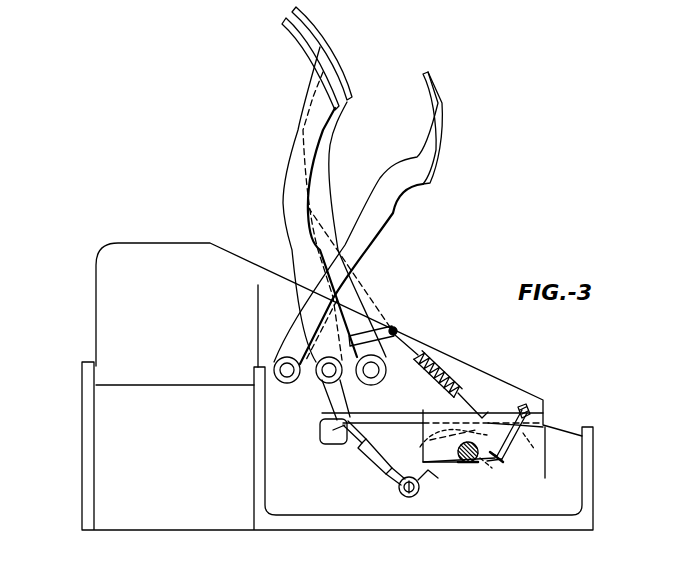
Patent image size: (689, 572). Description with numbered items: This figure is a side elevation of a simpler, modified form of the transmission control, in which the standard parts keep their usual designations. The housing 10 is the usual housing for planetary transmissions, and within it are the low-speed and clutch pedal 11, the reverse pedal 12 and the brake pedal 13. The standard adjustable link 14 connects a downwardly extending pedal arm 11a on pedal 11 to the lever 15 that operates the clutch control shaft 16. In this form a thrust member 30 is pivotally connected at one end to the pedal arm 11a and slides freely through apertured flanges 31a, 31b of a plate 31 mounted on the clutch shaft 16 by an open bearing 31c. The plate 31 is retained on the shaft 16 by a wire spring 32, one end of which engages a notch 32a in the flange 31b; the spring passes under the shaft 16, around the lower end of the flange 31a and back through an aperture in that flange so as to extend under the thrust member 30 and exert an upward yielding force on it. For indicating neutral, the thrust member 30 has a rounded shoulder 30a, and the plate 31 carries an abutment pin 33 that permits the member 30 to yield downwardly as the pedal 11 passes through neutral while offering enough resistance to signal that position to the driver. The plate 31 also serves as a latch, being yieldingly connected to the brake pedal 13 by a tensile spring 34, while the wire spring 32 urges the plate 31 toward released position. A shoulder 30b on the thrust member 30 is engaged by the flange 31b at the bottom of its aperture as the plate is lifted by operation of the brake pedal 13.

The housing 10 is at (167, 253).
The low-speed and clutch pedal 11 is at (292, 168).
The pedal arm 11a is at (334, 406).
The reverse pedal 12 is at (357, 252).
The brake pedal 13 is at (320, 190).
The adjustable link 14 is at (360, 449).
The lever 15 is at (418, 489).
The clutch control shaft 16 is at (470, 463).
The thrust member 30 is at (376, 424).
The rounded shoulder 30a is at (508, 416).
The shoulder 30b is at (542, 447).
The plate 31 is at (487, 415).
The apertured flange 31a is at (430, 416).
The apertured flange 31b is at (500, 447).
The open bearing 31c is at (458, 466).
The wire spring 32 is at (436, 466).
The notch 32a is at (492, 470).
The pin 33 is at (522, 421).
The tensile spring 34 is at (443, 386).